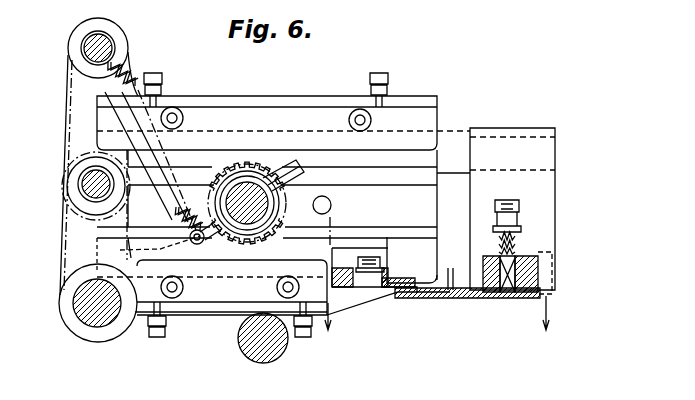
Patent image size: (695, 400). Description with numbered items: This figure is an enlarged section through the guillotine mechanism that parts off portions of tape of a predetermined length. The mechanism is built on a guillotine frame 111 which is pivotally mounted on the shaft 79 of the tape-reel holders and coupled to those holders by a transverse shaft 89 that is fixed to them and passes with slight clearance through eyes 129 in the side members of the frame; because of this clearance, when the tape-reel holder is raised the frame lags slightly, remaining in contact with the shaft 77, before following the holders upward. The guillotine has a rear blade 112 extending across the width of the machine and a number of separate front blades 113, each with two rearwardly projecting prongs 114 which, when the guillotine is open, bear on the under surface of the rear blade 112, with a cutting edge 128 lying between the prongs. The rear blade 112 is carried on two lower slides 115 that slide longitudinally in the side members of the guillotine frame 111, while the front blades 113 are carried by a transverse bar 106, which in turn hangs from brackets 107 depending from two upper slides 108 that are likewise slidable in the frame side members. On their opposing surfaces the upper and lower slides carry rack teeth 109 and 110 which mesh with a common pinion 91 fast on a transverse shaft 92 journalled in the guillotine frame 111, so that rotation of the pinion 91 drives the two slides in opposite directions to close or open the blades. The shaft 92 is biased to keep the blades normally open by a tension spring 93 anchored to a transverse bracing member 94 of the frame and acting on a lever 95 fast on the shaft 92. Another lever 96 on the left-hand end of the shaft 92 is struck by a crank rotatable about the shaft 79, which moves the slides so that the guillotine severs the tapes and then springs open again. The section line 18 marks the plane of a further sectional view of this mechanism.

The section line 18- 18 is at (446, 278).
The shaft 77 is at (252, 352).
The shaft 79 is at (78, 300).
The transverse shaft 89 is at (84, 187).
The pinion 91 is at (290, 210).
The transverse shaft 92 is at (172, 202).
The tension spring 93 is at (110, 84).
The transverse bracing member 94 is at (112, 50).
The lever 95 is at (205, 245).
The lever 96 is at (151, 248).
The transverse bar 106 is at (540, 272).
The bracket 107 is at (552, 186).
The upper slide 108 is at (438, 132).
The rack teeth 109 is at (279, 236).
The rack teeth 110 is at (219, 165).
The guillotine frame 111 is at (67, 105).
The rear blade 112 is at (395, 277).
The front blade 113 is at (480, 294).
The prong 114 is at (407, 293).
The lower slide 115 is at (343, 240).
The cutting edge 128 is at (442, 290).
The eye 129 is at (79, 181).